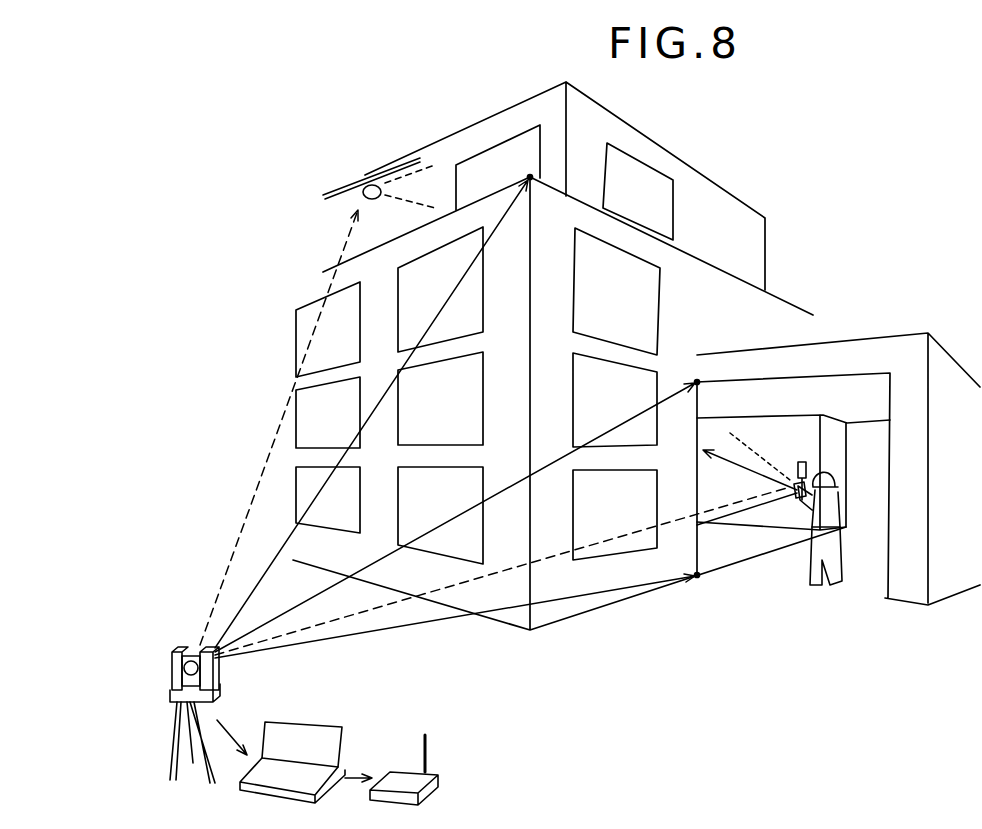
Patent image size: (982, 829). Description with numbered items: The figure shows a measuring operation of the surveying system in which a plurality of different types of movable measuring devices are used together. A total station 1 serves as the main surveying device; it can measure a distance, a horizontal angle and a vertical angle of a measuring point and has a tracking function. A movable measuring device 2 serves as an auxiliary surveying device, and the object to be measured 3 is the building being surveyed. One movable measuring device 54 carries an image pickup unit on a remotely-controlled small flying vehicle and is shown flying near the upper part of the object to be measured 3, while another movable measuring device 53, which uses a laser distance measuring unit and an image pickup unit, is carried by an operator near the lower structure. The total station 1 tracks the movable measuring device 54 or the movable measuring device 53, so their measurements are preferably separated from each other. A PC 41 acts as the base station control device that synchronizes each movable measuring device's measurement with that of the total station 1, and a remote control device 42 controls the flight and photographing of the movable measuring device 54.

The total station 1 is at (161, 701).
The movable measuring device 2 is at (792, 451).
The object to be measured 3 is at (710, 178).
The PC 41 is at (318, 722).
The remote control device 42 is at (440, 780).
The movable measuring device 53 is at (797, 500).
The movable measuring device 54 is at (345, 177).